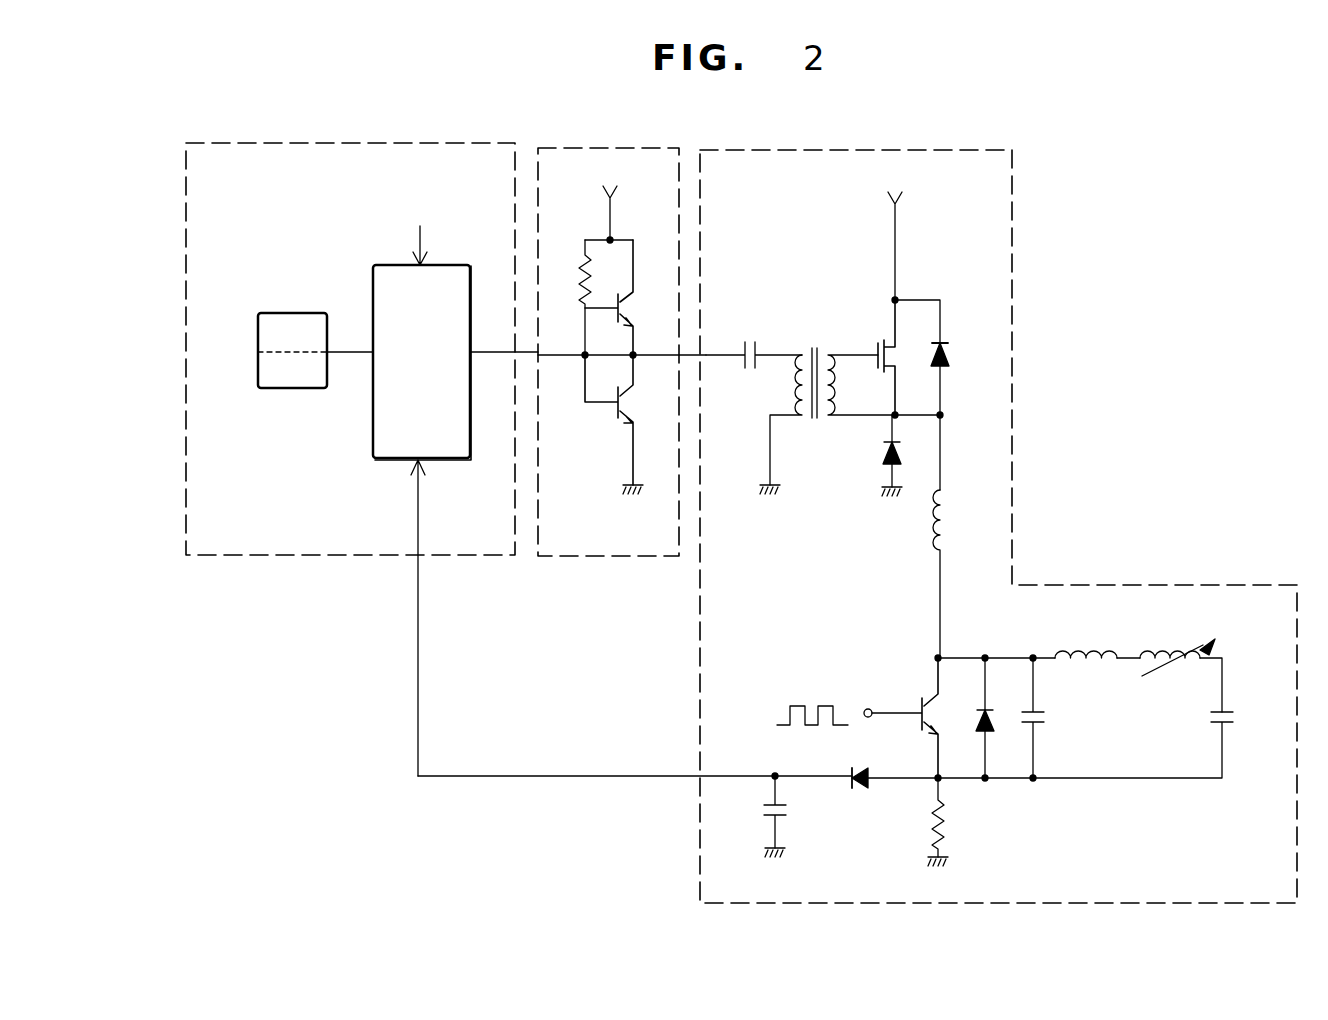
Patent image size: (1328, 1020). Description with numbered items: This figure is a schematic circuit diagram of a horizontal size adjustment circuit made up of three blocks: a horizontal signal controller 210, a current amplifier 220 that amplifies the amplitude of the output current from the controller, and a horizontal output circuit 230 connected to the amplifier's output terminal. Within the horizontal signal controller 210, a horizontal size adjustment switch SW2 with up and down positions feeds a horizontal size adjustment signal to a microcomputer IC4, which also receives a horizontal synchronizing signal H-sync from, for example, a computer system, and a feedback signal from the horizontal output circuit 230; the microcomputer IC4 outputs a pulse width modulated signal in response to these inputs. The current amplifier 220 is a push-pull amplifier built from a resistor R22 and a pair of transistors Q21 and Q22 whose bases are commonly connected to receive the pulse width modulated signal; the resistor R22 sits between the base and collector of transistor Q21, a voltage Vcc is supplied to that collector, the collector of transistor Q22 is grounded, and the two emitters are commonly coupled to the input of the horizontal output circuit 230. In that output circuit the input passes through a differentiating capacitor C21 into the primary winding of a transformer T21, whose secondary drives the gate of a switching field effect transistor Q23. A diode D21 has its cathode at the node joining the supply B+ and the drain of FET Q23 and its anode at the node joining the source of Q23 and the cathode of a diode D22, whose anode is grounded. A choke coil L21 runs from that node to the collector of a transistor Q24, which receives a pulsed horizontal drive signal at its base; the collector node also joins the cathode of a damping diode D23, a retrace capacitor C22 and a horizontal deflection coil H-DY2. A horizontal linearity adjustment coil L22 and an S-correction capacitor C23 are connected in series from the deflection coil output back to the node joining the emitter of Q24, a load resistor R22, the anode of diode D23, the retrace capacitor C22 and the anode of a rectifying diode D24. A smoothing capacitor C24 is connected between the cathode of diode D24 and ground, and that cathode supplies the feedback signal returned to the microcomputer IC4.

The horizontal signal controller 210 is at (245, 143).
The current amplifier 220 is at (598, 148).
The horizontal output circuit 230 is at (960, 150).
The horizontal size adjustment switch SW2 is at (296, 313).
The microcomputer IC4 is at (370, 268).
The resistor R22 is at (762, 553).
The transistor Q21 is at (622, 297).
The transistor Q22 is at (622, 424).
The differentiating capacitor C21 is at (754, 365).
The transformer T21 is at (850, 412).
The switching field effect transistor Q23 is at (901, 357).
The diode D21 is at (958, 416).
The diode D22 is at (909, 455).
The choke coil L21 is at (954, 574).
The horizontal deflection coil H-DY2 is at (1086, 643).
The horizontal linearity adjustment coil L22 is at (1177, 652).
The retrace capacitor C22 is at (1050, 718).
The S-correction capacitor C23 is at (1102, 743).
The transistor Q24 is at (913, 718).
The damping diode D23 is at (999, 718).
The rectifying diode D24 is at (854, 788).
The smoothing capacitor C24 is at (792, 815).